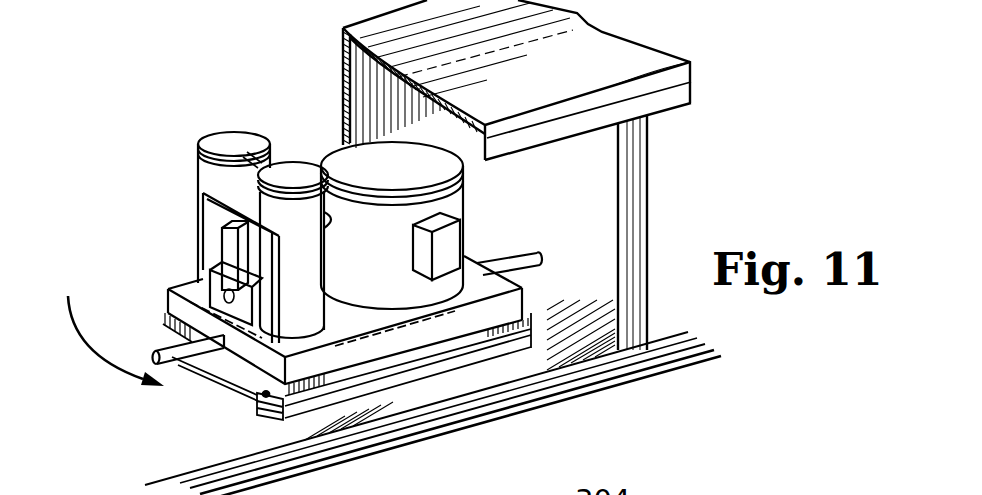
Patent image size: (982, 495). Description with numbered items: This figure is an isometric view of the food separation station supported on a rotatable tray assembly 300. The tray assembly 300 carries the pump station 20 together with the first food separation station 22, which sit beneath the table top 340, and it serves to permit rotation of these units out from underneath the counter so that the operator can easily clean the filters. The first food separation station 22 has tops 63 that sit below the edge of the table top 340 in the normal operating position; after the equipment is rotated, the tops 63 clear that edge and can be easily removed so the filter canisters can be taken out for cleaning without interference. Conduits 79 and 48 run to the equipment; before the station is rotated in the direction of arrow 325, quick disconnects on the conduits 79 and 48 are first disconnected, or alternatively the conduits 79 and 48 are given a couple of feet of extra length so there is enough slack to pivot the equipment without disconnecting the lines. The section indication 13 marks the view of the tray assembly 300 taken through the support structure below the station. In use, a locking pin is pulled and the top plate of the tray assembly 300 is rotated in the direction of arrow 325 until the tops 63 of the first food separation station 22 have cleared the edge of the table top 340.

The section line 13- 13 is at (188, 238).
The pump station 20 is at (326, 138).
The first food separation station 22 is at (190, 147).
The conduit 48 is at (505, 262).
The tops 63 is at (296, 168).
The conduit 79 is at (171, 358).
The tray assembly 300 is at (580, 380).
The arrow 325 is at (88, 350).
The table top 340 is at (672, 58).